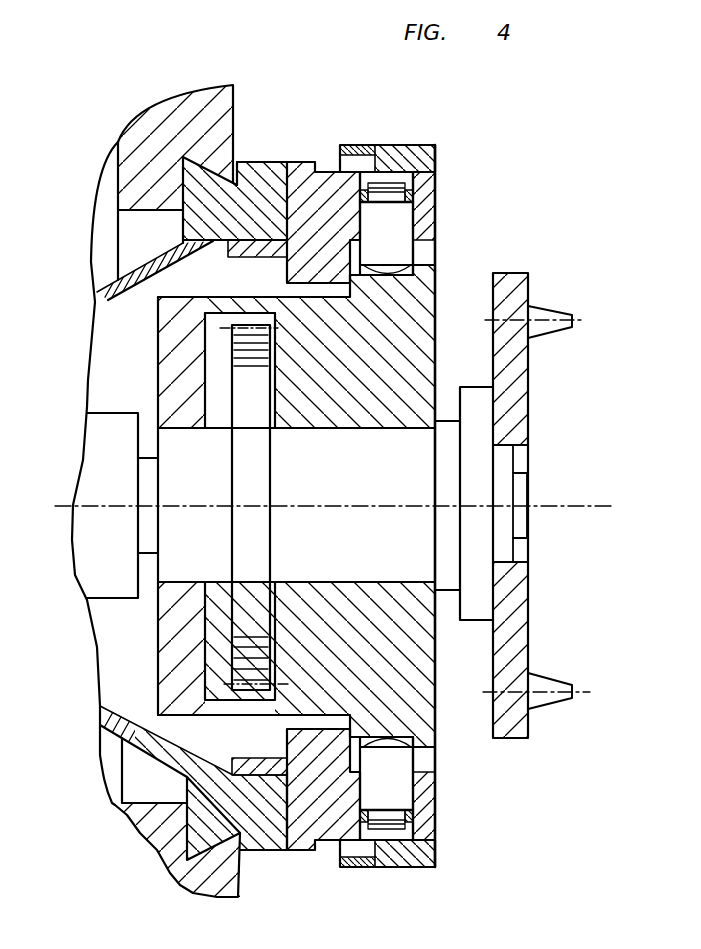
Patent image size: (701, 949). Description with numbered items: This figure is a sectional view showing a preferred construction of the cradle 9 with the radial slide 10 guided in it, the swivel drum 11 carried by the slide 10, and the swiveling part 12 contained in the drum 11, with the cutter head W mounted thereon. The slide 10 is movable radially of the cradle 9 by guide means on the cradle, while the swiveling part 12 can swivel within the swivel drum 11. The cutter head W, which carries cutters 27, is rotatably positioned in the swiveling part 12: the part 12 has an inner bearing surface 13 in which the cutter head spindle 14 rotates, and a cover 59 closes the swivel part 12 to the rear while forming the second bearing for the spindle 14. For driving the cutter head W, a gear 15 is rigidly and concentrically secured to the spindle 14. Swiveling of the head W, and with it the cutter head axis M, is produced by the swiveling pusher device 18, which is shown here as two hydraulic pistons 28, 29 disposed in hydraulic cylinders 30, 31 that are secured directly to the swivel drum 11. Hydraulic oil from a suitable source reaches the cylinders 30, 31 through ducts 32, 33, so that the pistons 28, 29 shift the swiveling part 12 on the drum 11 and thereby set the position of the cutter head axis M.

The cradle 9 is at (152, 117).
The slide 10 is at (256, 178).
The swivel drum 11 is at (303, 172).
The swiveling part 12 is at (413, 303).
The inner bearing surface 13 is at (323, 582).
The cutter head spindle 14 is at (215, 482).
The gear 15 is at (248, 538).
The swiveling pusher device 18 is at (457, 118).
The cutters 27 is at (545, 330).
The hydraulic piston 28 is at (397, 230).
The hydraulic piston 29 is at (400, 770).
The hydraulic cylinder 30 is at (405, 192).
The hydraulic cylinder 31 is at (398, 833).
The duct 32 is at (353, 151).
The duct 33 is at (357, 868).
The cover 59 is at (178, 685).
The cutter head axis M is at (92, 510).
The cutter head W is at (512, 440).